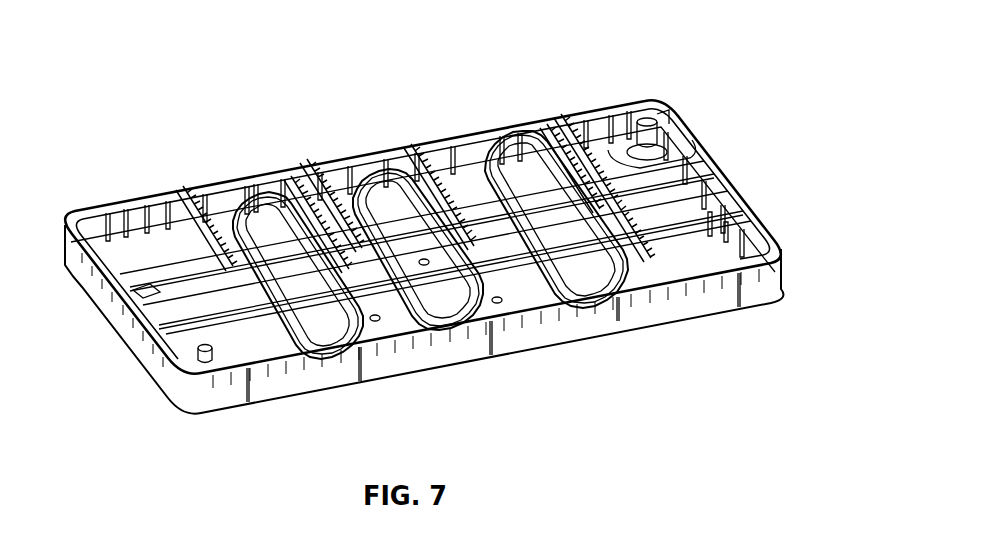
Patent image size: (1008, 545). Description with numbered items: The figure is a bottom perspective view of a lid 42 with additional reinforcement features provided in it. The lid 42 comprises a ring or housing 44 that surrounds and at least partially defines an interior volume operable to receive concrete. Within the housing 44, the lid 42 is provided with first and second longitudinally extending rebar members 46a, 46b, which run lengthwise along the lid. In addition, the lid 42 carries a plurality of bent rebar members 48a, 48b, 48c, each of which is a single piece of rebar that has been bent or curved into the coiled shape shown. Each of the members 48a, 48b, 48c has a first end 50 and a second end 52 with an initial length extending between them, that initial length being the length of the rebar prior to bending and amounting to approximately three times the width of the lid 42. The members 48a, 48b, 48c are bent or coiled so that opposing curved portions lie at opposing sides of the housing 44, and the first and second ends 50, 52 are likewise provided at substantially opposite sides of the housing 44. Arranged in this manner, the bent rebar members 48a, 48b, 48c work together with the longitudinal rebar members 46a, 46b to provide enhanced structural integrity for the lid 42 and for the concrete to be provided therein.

The lid 42 is at (463, 224).
The ring or housing 44 is at (800, 290).
The first longitudinally extending rebar member 46a is at (718, 218).
The second longitudinally extending rebar member 46b is at (125, 283).
The bent rebar member 48a is at (229, 182).
The bent rebar member 48b is at (386, 158).
The bent rebar member 48c is at (534, 128).
The first end 50 is at (303, 190).
The second end 52 is at (373, 327).